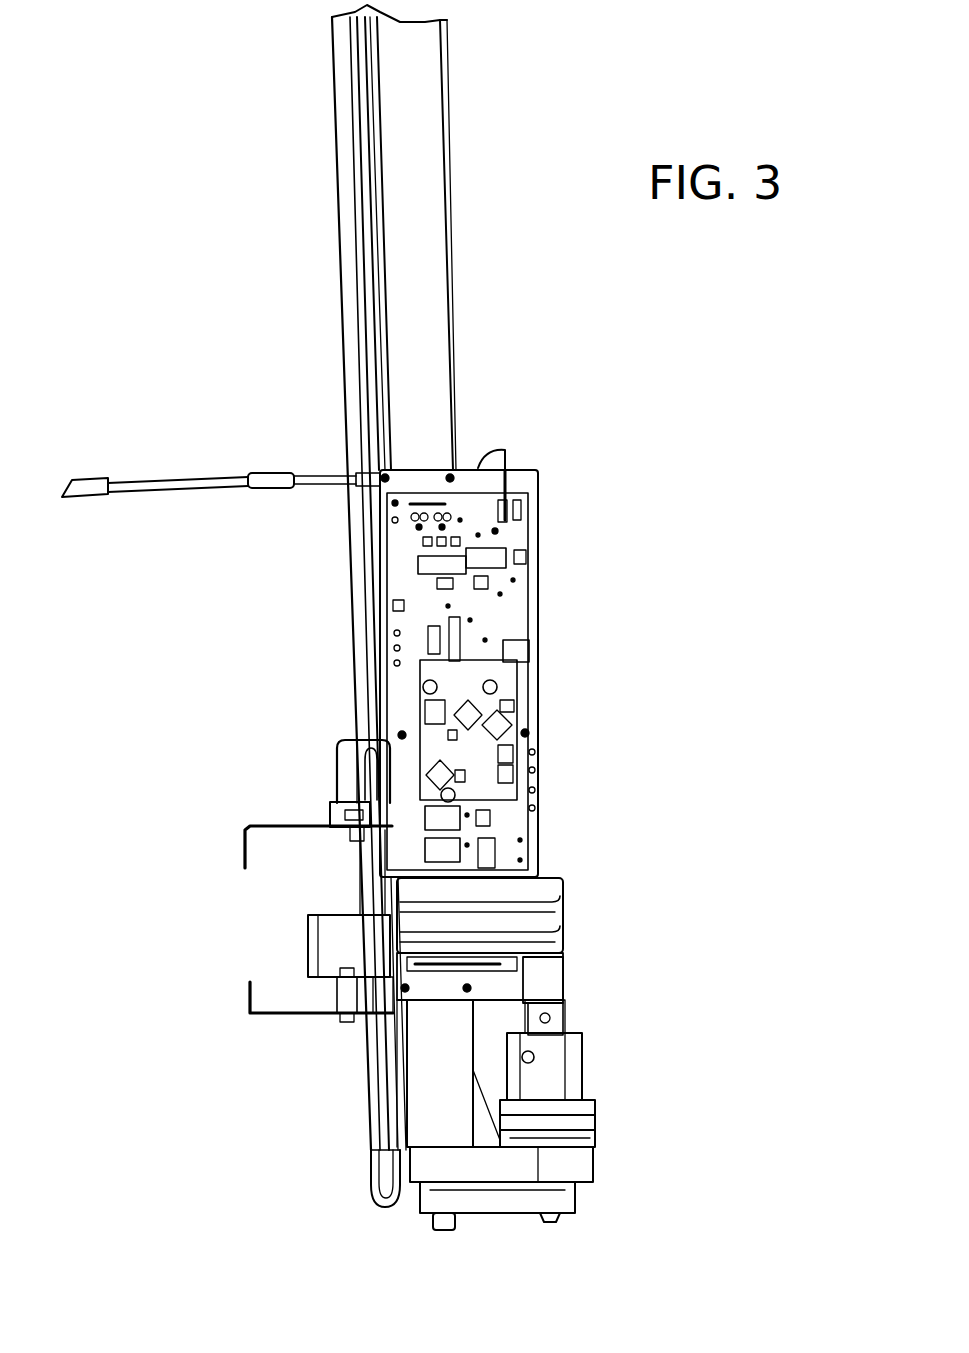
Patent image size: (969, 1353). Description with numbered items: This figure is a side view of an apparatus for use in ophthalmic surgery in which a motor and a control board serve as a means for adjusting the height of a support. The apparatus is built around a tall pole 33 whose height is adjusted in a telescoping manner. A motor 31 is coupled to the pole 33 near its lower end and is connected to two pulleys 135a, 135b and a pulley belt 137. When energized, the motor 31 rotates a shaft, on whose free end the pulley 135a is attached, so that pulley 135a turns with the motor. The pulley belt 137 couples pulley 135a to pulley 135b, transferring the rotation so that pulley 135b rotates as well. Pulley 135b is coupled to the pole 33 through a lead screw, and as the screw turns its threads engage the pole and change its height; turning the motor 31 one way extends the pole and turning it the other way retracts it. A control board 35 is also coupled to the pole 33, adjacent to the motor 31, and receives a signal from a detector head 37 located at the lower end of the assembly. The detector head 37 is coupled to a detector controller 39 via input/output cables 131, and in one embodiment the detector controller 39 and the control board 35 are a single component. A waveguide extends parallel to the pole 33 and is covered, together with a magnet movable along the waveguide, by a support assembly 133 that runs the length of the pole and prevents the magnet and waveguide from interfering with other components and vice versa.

The motor 31 is at (592, 1100).
The pole 33 is at (430, 193).
The control board 35 is at (540, 697).
The detector head 37 is at (370, 1180).
The detector controller 39 is at (327, 817).
The input/output cables 131 is at (333, 777).
The support assembly 133 is at (333, 115).
The pulley 135a is at (570, 1216).
The pulley 135b is at (438, 1232).
The pulley belt 137 is at (497, 1213).